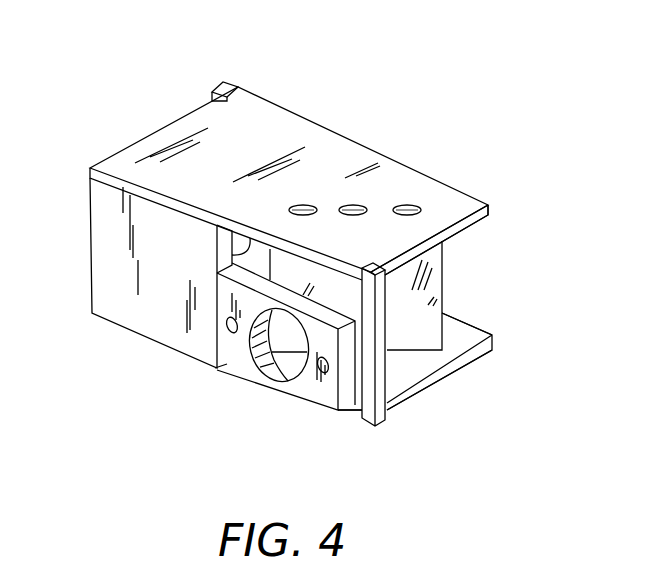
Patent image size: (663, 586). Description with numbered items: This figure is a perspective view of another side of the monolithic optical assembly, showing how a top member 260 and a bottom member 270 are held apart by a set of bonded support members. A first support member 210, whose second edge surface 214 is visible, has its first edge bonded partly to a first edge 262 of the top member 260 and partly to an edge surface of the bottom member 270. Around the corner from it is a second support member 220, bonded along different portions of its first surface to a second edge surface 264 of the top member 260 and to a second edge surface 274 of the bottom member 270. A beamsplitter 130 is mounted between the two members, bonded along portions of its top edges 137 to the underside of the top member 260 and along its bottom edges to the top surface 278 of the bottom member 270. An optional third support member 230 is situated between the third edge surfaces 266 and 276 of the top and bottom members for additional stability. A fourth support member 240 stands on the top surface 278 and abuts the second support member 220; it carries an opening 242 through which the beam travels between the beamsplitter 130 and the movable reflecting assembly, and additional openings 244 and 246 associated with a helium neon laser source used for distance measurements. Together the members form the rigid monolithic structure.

The beamsplitter 130 is at (450, 268).
The top edges 137 is at (405, 204).
The first support member 210 is at (228, 78).
The second edge surface 214 is at (218, 96).
The second support member 220 is at (104, 282).
The third support member 230 is at (379, 373).
The fourth support member 240 is at (355, 410).
The opening 242 is at (270, 355).
The opening 244 is at (313, 375).
The opening 246 is at (228, 330).
The top member 260 is at (283, 118).
The first edge 262 is at (153, 131).
The second edge surface 264 is at (232, 257).
The third edge surface 266 is at (491, 216).
The bottom member 270 is at (503, 330).
The second edge surface 274 is at (360, 420).
The third edge surface 276 is at (449, 372).
The top surface 278 is at (457, 333).